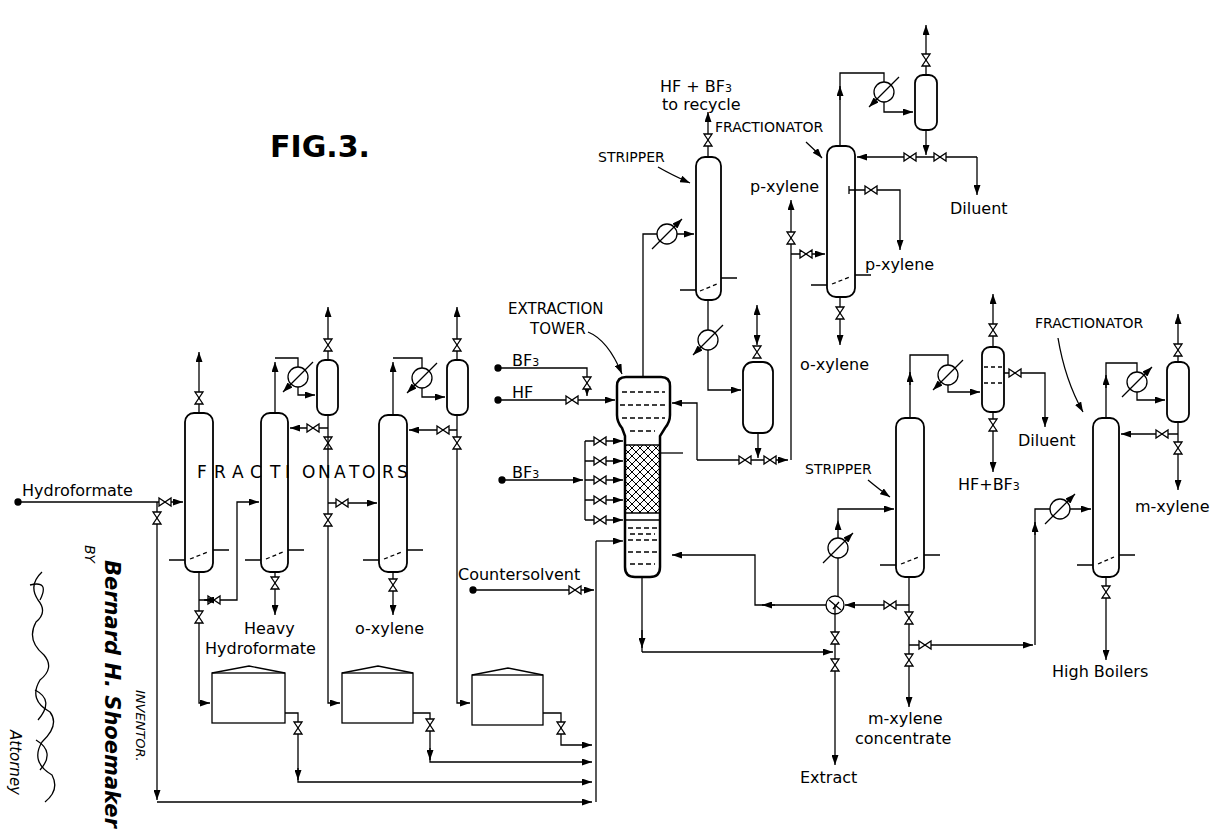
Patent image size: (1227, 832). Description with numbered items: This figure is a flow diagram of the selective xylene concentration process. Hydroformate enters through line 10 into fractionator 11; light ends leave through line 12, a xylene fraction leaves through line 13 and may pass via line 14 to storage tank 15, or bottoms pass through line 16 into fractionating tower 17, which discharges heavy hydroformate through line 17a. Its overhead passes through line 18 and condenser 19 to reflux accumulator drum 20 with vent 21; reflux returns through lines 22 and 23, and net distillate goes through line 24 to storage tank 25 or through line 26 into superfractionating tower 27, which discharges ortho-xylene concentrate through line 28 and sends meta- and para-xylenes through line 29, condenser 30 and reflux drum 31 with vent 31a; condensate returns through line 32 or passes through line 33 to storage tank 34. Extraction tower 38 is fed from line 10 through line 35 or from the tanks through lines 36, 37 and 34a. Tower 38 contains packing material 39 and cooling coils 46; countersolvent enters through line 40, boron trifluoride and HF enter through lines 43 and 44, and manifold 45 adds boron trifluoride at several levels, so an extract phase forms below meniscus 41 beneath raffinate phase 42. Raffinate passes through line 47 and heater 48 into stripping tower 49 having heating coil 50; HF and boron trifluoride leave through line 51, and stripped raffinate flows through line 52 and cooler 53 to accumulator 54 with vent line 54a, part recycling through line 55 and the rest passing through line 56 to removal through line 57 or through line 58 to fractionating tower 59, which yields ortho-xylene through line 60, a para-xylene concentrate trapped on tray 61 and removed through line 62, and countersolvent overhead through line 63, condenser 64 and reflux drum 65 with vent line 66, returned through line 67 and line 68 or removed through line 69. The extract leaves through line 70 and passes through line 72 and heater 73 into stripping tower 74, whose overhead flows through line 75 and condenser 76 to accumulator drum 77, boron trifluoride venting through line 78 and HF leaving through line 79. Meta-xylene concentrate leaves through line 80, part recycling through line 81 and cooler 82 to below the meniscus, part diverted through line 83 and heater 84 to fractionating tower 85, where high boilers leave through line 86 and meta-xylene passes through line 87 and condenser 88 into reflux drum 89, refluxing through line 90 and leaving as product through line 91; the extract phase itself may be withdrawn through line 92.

The valved line 10 is at (80, 504).
The fractionator 11 is at (185, 448).
The valved line 12 is at (196, 382).
The line 13 is at (199, 590).
The valved line 14 is at (199, 685).
The storage tank 15 is at (246, 726).
The valved line 16 is at (237, 600).
The fractionating tower 17 is at (261, 448).
The valved line 17a is at (276, 598).
The line 18 is at (275, 385).
The condenser 19 is at (309, 362).
The reflux accumulator drum 20 is at (338, 376).
The valved vent 21 is at (328, 323).
The valved line 22 is at (332, 428).
The valved line 23 is at (312, 440).
The valved line 24 is at (328, 570).
The storage tank 25 is at (380, 728).
The valved line 26 is at (344, 509).
The superfractionating tower 27 is at (407, 466).
The valved line 28 is at (393, 605).
The line 29 is at (393, 390).
The condenser 30 is at (432, 366).
The reflux drum 31 is at (468, 366).
The valved vent 31a is at (460, 327).
The valved line 32 is at (412, 428).
The valved line 33 is at (457, 522).
The storage tank 34 is at (508, 728).
The valved line 34a is at (570, 745).
The valved line 35 is at (157, 650).
The valved line 36 is at (403, 782).
The valved line 37 is at (477, 762).
The extraction tower 38 is at (650, 378).
The packing material 39 is at (660, 485).
The valved line 40 is at (503, 593).
The meniscus 41 is at (648, 528).
The raffinate phase 42 is at (660, 514).
The valved line 43 is at (544, 373).
The valved line 44 is at (543, 404).
The manifold 45 is at (582, 496).
The cooling coils 46 is at (668, 452).
The valved line 47 is at (643, 277).
The heater 48 is at (662, 225).
The stripping tower 49 is at (721, 173).
The heating coil 50 is at (722, 292).
The valved line 51 is at (708, 129).
The valved line 52 is at (708, 321).
The cooler 53 is at (698, 337).
The accumulator 54 is at (772, 364).
The valved vent line 54a is at (761, 328).
The valved line 55 is at (764, 464).
The valved line 56 is at (791, 409).
The valved line 57 is at (789, 212).
The valved line 58 is at (806, 258).
The fractionating tower 59 is at (827, 179).
The valved line 60 is at (846, 335).
The tray 61 is at (856, 186).
The valved line 62 is at (900, 216).
The line 63 is at (838, 98).
The condenser 64 is at (876, 96).
The reflux drum 65 is at (937, 97).
The valved vent line 66 is at (931, 48).
The line 67 is at (933, 143).
The valved line 68 is at (893, 160).
The valved line 69 is at (980, 176).
The line 70 is at (646, 618).
The valved line 72 is at (726, 652).
The heater 73 is at (830, 547).
The stripping tower 74 is at (924, 443).
The line 75 is at (910, 401).
The condenser 76 is at (940, 374).
The accumulator drum 77 is at (1004, 359).
The valved line 78 is at (993, 319).
The valved line 79 is at (993, 447).
The valved line 80 is at (909, 599).
The valved line 81 is at (860, 608).
The cooler 82 is at (827, 599).
The valved line 83 is at (963, 645).
The heater 84 is at (1052, 522).
The fractionating tower 85 is at (1093, 475).
The valved line 86 is at (1108, 634).
The line 87 is at (1106, 411).
The condenser 88 is at (1147, 368).
The reflux drum 89 is at (1189, 361).
The valved line 90 is at (1140, 436).
The valved line 91 is at (1180, 478).
The valved line 92 is at (835, 709).